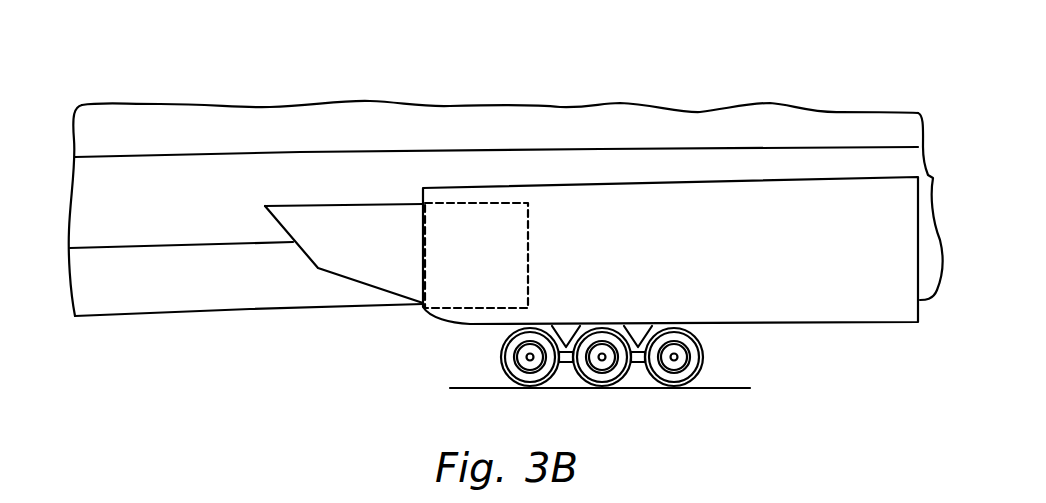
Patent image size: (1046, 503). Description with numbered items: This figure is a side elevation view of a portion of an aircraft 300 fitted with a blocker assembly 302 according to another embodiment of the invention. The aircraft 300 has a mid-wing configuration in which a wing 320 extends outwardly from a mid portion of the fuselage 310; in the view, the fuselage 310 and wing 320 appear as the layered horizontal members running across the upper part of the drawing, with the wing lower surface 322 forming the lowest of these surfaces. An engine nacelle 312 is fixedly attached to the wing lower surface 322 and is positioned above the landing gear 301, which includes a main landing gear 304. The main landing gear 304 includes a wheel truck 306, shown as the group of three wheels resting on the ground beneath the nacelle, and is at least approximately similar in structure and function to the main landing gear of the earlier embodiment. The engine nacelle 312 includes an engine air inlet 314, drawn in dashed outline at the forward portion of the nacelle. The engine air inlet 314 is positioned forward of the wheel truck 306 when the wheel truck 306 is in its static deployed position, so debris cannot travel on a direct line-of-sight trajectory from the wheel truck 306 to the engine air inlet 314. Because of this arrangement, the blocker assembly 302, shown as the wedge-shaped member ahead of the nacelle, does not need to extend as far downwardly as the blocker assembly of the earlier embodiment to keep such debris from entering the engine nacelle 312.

The aircraft 300 is at (506, 203).
The landing gear 301 is at (464, 336).
The blocker assembly 302 is at (313, 267).
The main landing gear 304 is at (608, 357).
The wheel truck 306 is at (502, 362).
The fuselage 310 is at (250, 127).
The engine nacelle 312 is at (670, 250).
The engine air inlet 314 is at (422, 313).
The wing 320 is at (125, 192).
The wing lower surface 322 is at (122, 247).